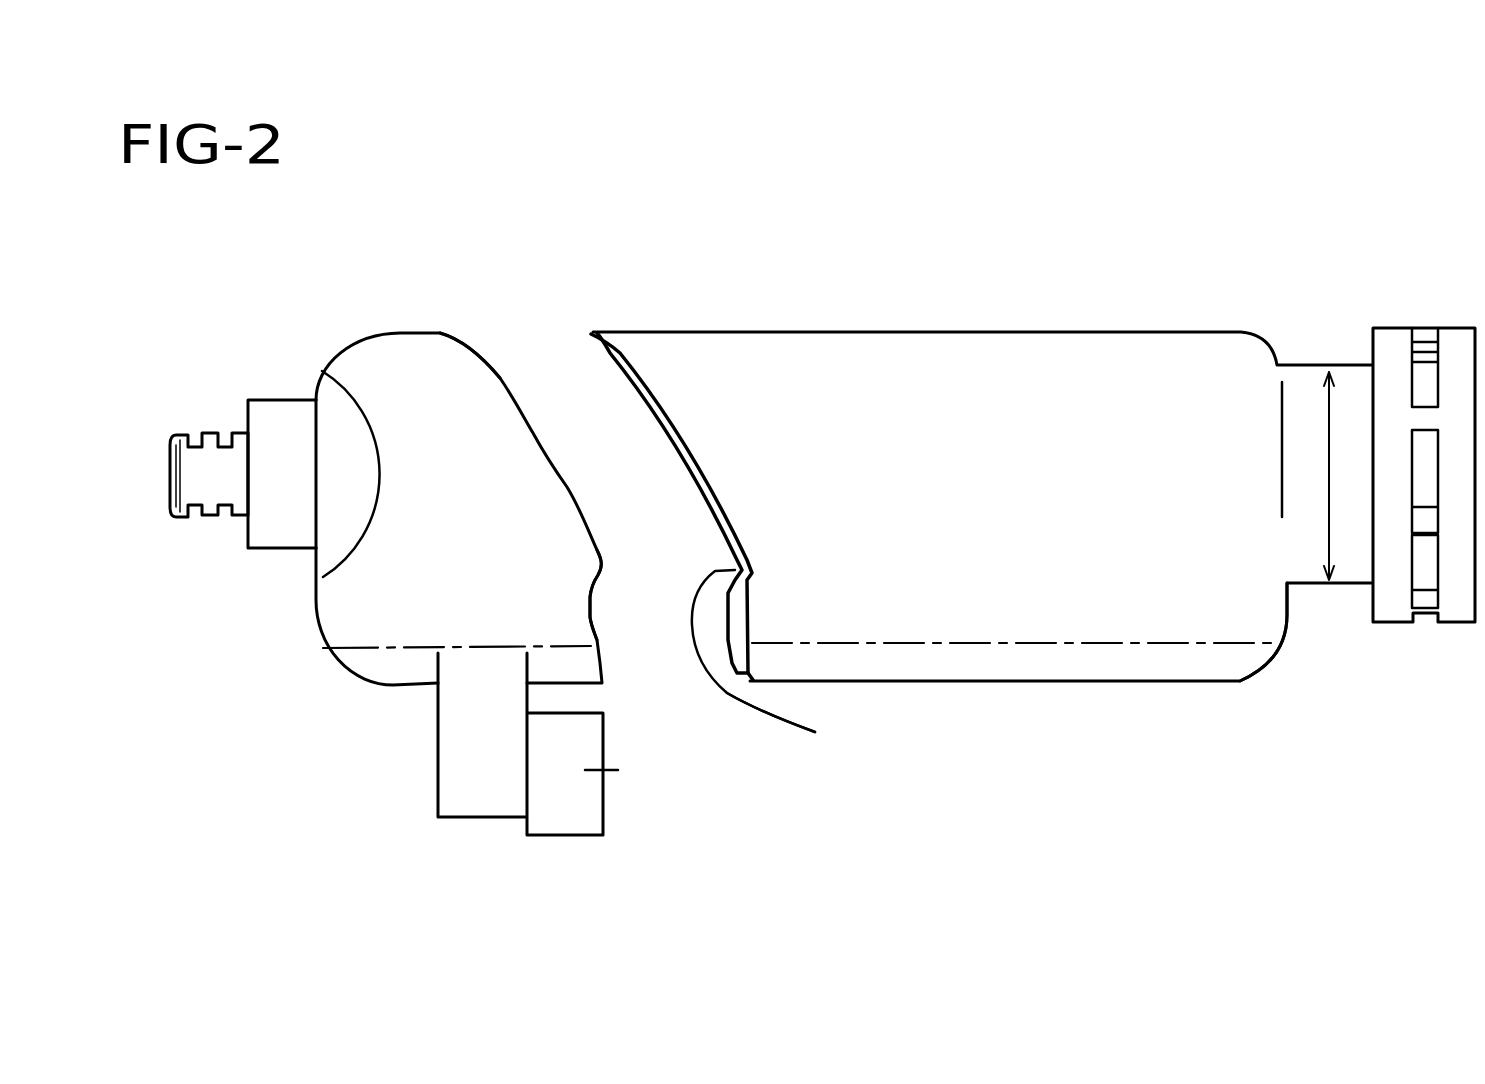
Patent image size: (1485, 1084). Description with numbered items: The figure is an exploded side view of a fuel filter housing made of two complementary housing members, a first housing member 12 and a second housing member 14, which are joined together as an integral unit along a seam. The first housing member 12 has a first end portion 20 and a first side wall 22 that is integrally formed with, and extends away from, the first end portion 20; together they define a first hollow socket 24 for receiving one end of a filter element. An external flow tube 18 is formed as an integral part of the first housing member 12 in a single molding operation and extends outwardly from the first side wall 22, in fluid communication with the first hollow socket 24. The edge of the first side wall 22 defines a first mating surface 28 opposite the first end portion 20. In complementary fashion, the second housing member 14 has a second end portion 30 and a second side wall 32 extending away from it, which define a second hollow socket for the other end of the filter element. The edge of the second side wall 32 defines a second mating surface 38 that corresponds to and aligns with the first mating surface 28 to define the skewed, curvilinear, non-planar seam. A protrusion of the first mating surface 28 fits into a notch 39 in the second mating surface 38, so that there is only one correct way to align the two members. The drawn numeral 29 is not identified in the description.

The first housing member 12 is at (460, 522).
The second housing member 14 is at (975, 505).
The external flow tube 18 is at (478, 820).
The first end portion 20 is at (307, 597).
The first side wall 22 is at (400, 357).
The first hollow socket 24 is at (485, 358).
The first mating surface 28 is at (592, 627).
The neck 29 is at (608, 562).
The second end portion 30 is at (1295, 605).
The second side wall 32 is at (1007, 325).
The second mating surface 38 is at (720, 502).
The notch 39 is at (802, 731).